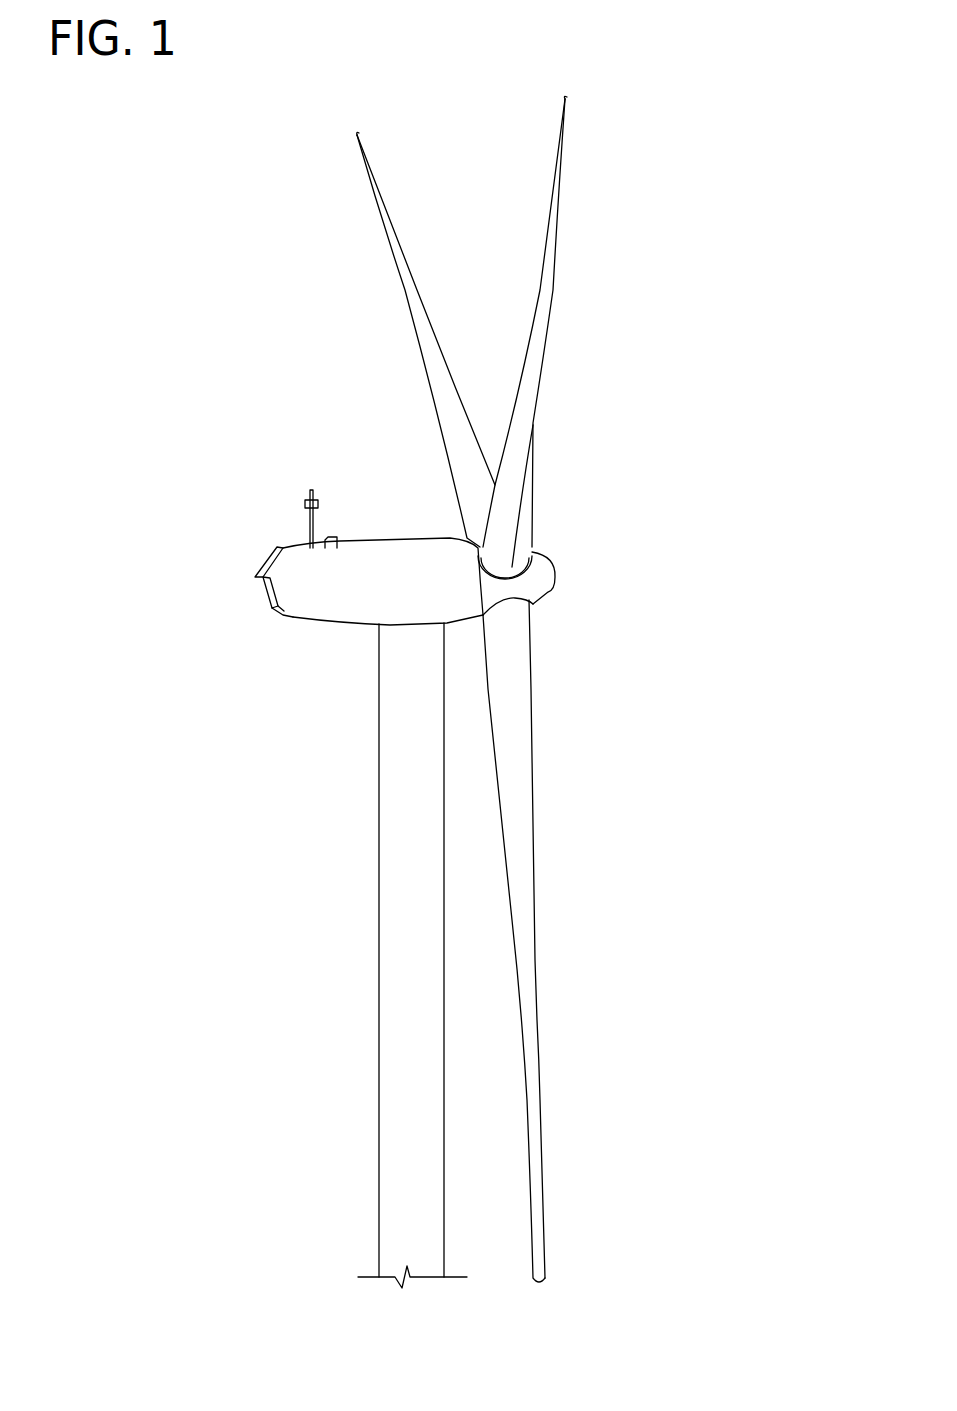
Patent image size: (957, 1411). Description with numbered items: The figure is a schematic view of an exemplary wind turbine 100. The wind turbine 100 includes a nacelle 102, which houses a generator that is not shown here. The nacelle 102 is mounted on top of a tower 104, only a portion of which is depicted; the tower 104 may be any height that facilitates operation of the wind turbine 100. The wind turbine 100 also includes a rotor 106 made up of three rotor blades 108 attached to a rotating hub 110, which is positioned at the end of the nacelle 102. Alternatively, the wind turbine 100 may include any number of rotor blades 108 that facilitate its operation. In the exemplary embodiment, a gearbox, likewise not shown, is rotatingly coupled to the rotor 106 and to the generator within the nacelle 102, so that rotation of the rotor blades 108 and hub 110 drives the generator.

The wind turbine 100 is at (245, 183).
The nacelle 102 is at (312, 618).
The tower 104 is at (378, 900).
The rotor 106 is at (605, 317).
The rotor blades 108 is at (397, 220).
The rotating hub 110 is at (548, 592).